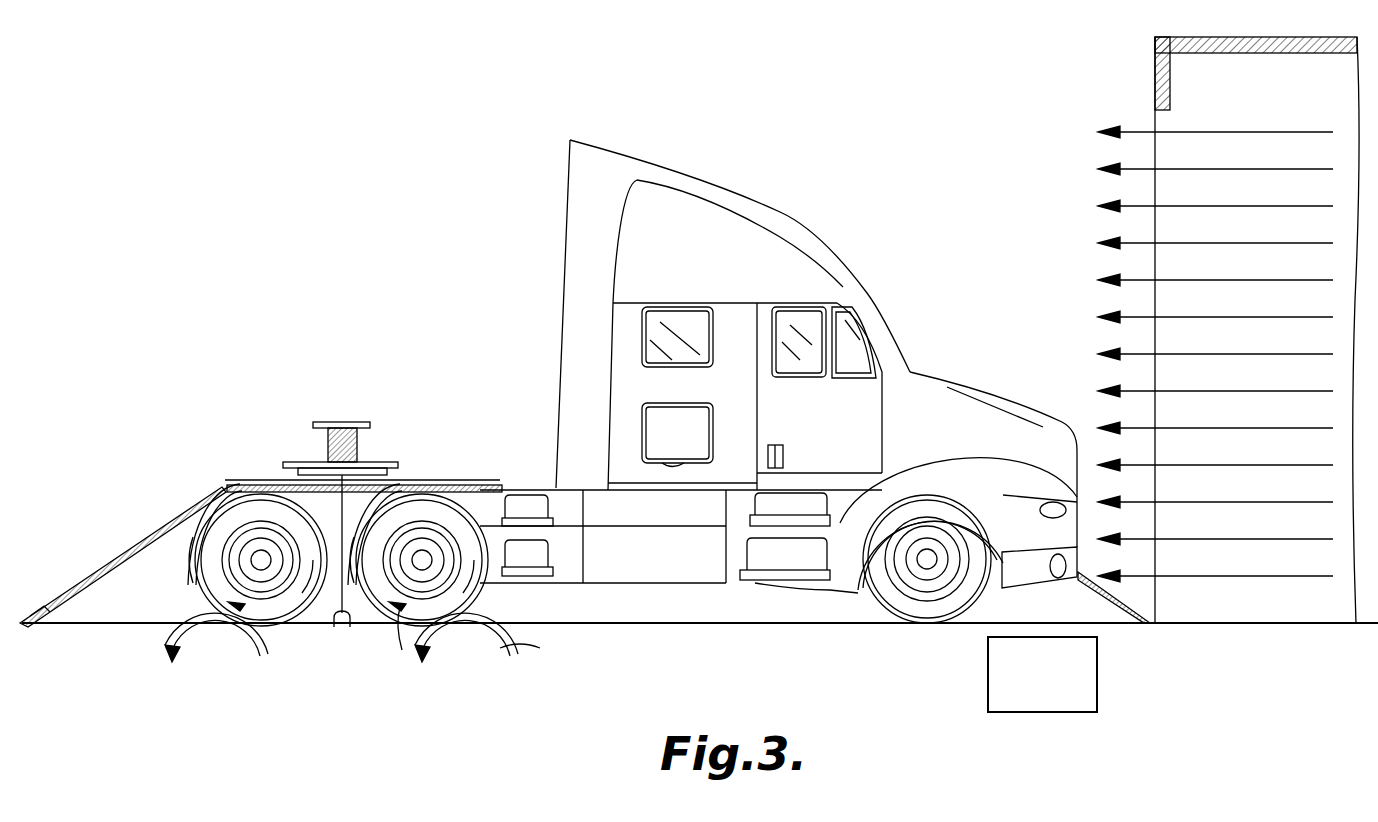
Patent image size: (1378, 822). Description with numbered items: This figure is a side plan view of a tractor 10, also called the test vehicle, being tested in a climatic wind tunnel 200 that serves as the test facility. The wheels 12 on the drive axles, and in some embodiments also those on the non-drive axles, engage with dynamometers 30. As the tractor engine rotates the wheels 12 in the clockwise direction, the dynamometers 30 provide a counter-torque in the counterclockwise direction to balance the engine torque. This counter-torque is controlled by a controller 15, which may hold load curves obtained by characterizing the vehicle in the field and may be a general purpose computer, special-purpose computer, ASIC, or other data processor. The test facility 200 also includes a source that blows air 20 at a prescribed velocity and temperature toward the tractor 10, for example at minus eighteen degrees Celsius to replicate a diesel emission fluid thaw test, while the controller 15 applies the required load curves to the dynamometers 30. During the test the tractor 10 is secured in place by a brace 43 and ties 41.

The tractor 10 is at (652, 172).
The wheels 12 is at (262, 507).
The controller 15 is at (1098, 671).
The air 20 is at (1125, 115).
The dynamometers 30 is at (196, 617).
The ties 41 is at (150, 537).
The brace 43 is at (352, 424).
The climatic wind tunnel 200 is at (938, 182).